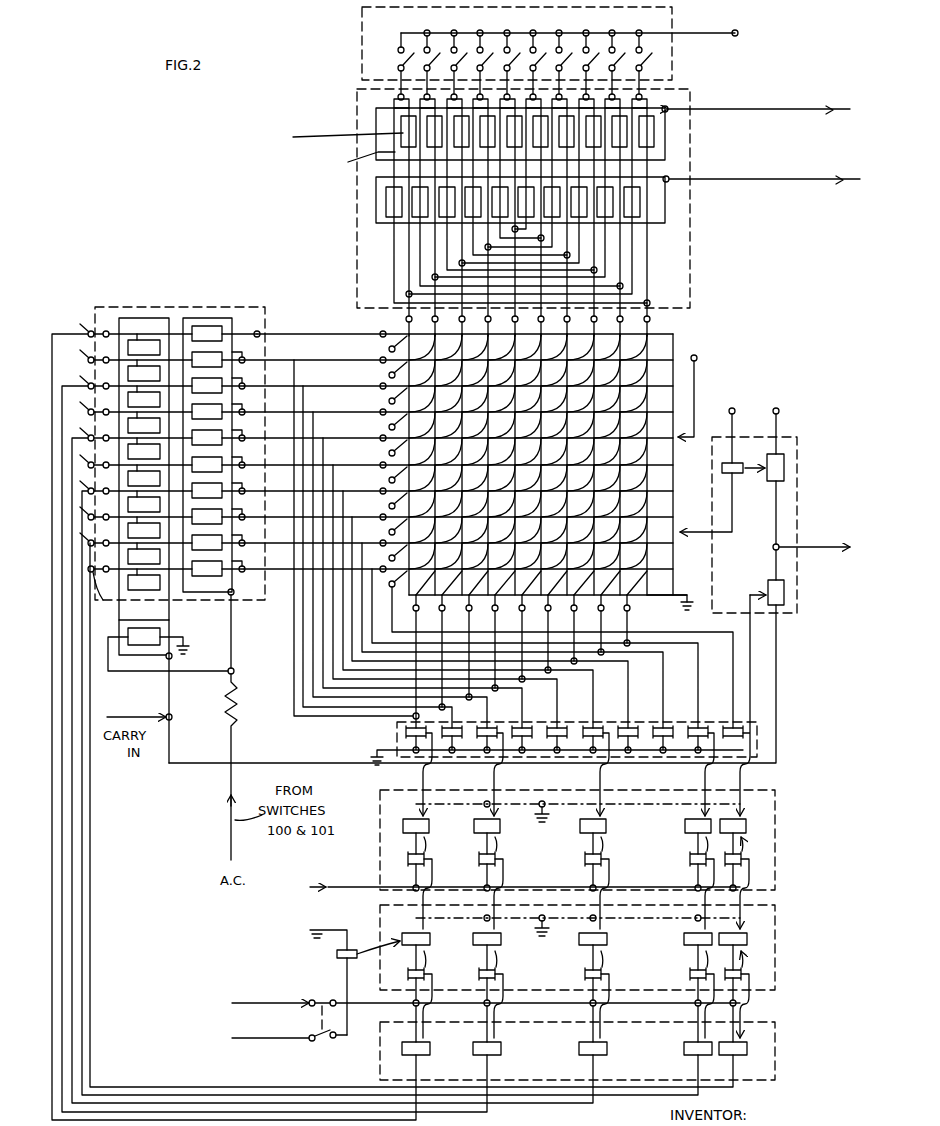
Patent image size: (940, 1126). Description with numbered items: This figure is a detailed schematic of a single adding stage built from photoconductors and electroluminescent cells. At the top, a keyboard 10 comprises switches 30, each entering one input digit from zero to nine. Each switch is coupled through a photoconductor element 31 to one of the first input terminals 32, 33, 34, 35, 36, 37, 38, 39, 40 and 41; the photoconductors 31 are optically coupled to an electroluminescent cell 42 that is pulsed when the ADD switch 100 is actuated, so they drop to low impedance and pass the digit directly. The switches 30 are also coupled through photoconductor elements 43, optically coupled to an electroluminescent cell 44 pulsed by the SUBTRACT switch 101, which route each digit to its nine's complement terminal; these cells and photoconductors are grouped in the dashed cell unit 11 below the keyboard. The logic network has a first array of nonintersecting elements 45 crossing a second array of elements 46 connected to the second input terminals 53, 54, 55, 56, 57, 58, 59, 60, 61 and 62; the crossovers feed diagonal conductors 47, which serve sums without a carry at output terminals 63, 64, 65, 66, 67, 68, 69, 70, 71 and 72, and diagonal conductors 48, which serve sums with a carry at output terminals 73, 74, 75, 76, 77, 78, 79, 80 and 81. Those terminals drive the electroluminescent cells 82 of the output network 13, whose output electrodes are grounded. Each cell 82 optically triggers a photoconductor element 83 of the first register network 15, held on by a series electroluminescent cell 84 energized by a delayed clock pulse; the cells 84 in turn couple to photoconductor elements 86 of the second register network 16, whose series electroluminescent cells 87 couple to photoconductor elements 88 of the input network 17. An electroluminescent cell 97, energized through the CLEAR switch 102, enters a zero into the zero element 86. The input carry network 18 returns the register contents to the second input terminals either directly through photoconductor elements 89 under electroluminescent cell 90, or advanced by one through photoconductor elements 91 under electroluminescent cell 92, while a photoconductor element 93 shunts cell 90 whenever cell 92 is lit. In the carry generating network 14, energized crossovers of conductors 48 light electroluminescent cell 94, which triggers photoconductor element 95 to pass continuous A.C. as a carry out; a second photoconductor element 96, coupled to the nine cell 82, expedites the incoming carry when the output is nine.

The keyboard 10 is at (362, 30).
The electroluminescent cell unit 11 is at (357, 241).
The output network 13 is at (714, 722).
The carry generating network 14 is at (797, 510).
The first register network 15 is at (775, 835).
The second register network 16 is at (775, 950).
The input network 17 is at (775, 1045).
The input carry network 18 is at (190, 307).
The switches 30 is at (398, 61).
The photoconductor elements 31 is at (403, 120).
The first input terminal 32 is at (406, 321).
The first input terminal 33 is at (418, 222).
The first input terminal 34 is at (444, 222).
The first input terminal 35 is at (471, 222).
The first input terminal 36 is at (497, 222).
The first input terminal 37 is at (524, 222).
The first input terminal 38 is at (550, 222).
The first input terminal 39 is at (576, 222).
The first input terminal 40 is at (603, 222).
The first input terminal 41 is at (629, 222).
The electroluminescent cell 42 is at (518, 129).
The photoconductor elements 43 is at (376, 200).
The electroluminescent cell 44 is at (519, 199).
The first array of nonintersecting elements 45 is at (650, 321).
The second array of nonintersecting elements 46 is at (380, 332).
The diagonal output conductors 47 is at (638, 356).
The diagonal output conductors 48 is at (640, 482).
The second input terminal 53 is at (380, 336).
The second input terminal 54 is at (380, 362).
The second input terminal 55 is at (380, 388).
The second input terminal 56 is at (380, 414).
The second input terminal 57 is at (380, 440).
The second input terminal 58 is at (380, 467).
The second input terminal 59 is at (380, 493).
The second input terminal 60 is at (380, 519).
The second input terminal 61 is at (380, 545).
The second input terminal 62 is at (385, 590).
The output terminal 63 is at (380, 353).
The output terminal 64 is at (380, 379).
The output terminal 65 is at (380, 405).
The output terminal 66 is at (380, 431).
The output terminal 67 is at (380, 457).
The output terminal 68 is at (380, 484).
The output terminal 69 is at (385, 509).
The output terminal 70 is at (385, 535).
The output terminal 71 is at (385, 561).
The output terminal 72 is at (407, 661).
The output terminal 73 is at (420, 611).
The output terminal 74 is at (446, 611).
The output terminal 75 is at (473, 611).
The output terminal 76 is at (499, 611).
The output terminal 77 is at (526, 611).
The output terminal 78 is at (552, 611).
The output terminal 79 is at (578, 611).
The output terminal 80 is at (605, 611).
The output terminal 81 is at (631, 611).
The electroluminescent cells 82 is at (404, 731).
The photoconductor elements 83 is at (429, 826).
The electroluminescent cells 84 is at (406, 858).
The photoconductor elements 86 is at (430, 940).
The electroluminescent cells 87 is at (406, 974).
The photoconductor elements 88 is at (430, 1048).
The photoconductor elements 89 is at (205, 318).
The electroluminescent cell 90 is at (215, 326).
The photoconductor elements 91 is at (128, 318).
The electroluminescent cell 92 is at (140, 340).
The photoconductor element 93 is at (140, 628).
The electroluminescent cell 94 is at (738, 475).
The photoconductor element 95 is at (784, 468).
The second photoconductor element 96 is at (784, 600).
The electroluminescent cell 97 is at (336, 955).
The ADD switch 100 is at (804, 108).
The SUBTRACT switch 101 is at (790, 183).
The CLEAR switch 102 is at (322, 1042).